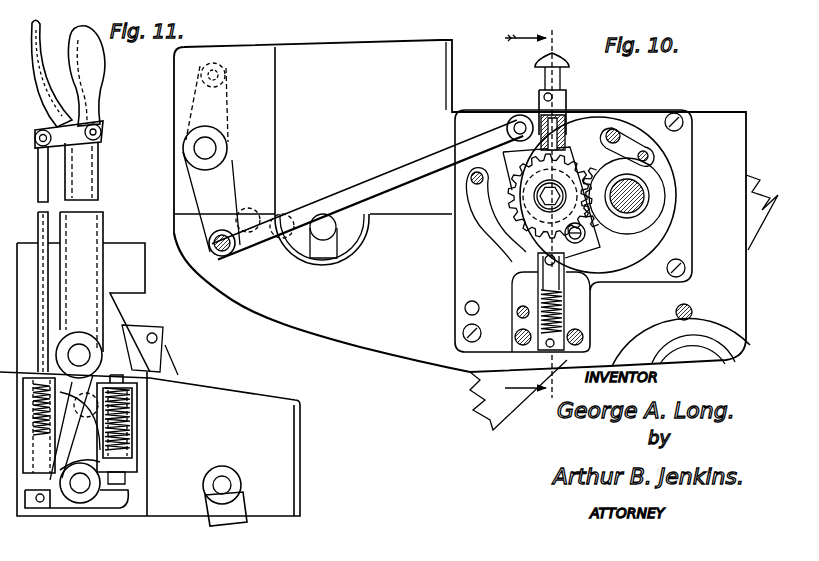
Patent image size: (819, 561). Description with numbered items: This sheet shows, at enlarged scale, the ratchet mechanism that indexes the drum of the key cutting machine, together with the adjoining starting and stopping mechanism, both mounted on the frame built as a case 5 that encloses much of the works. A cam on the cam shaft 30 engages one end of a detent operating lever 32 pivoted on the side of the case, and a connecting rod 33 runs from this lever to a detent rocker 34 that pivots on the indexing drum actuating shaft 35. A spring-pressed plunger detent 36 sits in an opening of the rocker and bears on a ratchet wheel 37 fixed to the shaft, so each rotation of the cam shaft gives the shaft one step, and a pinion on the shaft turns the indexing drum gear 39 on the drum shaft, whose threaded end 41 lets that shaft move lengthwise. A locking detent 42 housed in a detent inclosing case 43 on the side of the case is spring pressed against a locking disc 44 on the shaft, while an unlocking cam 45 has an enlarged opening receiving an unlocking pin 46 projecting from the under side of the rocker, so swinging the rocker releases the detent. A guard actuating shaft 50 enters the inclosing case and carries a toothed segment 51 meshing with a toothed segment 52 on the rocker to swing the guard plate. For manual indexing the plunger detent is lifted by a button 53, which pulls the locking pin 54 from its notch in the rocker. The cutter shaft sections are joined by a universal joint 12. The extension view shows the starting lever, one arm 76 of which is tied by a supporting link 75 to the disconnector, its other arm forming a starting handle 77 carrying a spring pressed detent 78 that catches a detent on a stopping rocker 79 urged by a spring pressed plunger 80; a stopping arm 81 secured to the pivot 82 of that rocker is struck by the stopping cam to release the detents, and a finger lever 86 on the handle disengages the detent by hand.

In FIG. 11, the case 5 is at (108, 320).
In FIG. 10, the case 5 is at (358, 332).
In FIG. 10, the universal joint 12 is at (540, 34).
In FIG. 10, the cam shaft 30 is at (452, 80).
In FIG. 11, the detent operating lever 32 is at (244, 498).
In FIG. 10, the detent operating lever 32 is at (220, 182).
In FIG. 10, the connecting rod 33 is at (352, 182).
In FIG. 10, the detent rocker 34 is at (500, 148).
In FIG. 10, the indexing drum actuating shaft 35 is at (552, 202).
In FIG. 10, the plunger detent 36 is at (560, 140).
In FIG. 10, the ratchet wheel 37 is at (538, 198).
In FIG. 10, the indexing drum gear 39 is at (509, 395).
In FIG. 10, the threaded end 41 is at (690, 362).
In FIG. 10, the locking detent 42 is at (548, 294).
In FIG. 10, the detent inclosing case 43 is at (511, 289).
In FIG. 10, the locking disc 44 is at (523, 235).
In FIG. 10, the unlocking cam 45 is at (600, 283).
In FIG. 10, the unlocking pin 46 is at (582, 234).
In FIG. 10, the guard actuating shaft 50 is at (645, 196).
In FIG. 10, the toothed segment 51 is at (622, 150).
In FIG. 10, the toothed segment 52 is at (580, 176).
In FIG. 10, the button 53 is at (560, 66).
In FIG. 10, the locking pin 54 is at (566, 94).
In FIG. 11, the supporting link 75 is at (168, 348).
In FIG. 11, the arm of starting lever 76 is at (158, 330).
In FIG. 11, the starting handle 77 is at (92, 232).
In FIG. 11, the spring pressed detent 78 is at (36, 473).
In FIG. 11, the stopping rocker 79 is at (130, 492).
In FIG. 11, the spring pressed plunger 80 is at (126, 478).
In FIG. 11, the stopping arm 81 is at (134, 410).
In FIG. 11, the pivot 82 is at (82, 488).
In FIG. 11, the finger lever 86 is at (55, 38).